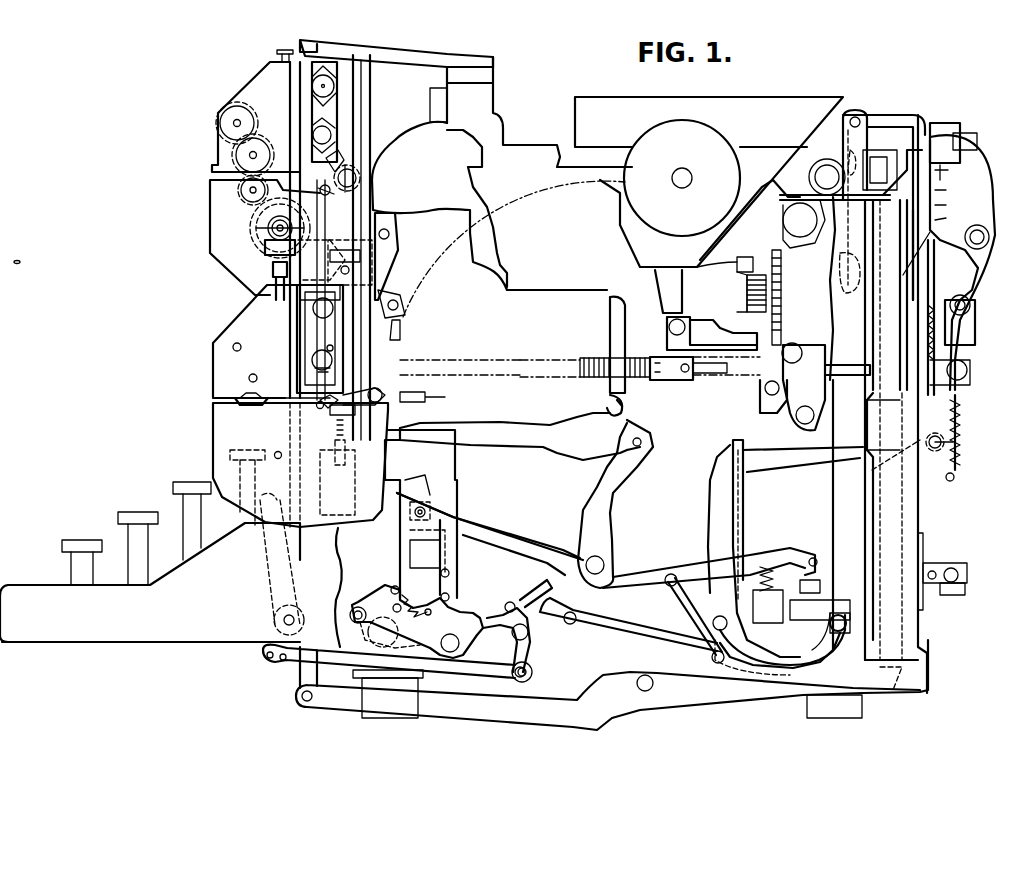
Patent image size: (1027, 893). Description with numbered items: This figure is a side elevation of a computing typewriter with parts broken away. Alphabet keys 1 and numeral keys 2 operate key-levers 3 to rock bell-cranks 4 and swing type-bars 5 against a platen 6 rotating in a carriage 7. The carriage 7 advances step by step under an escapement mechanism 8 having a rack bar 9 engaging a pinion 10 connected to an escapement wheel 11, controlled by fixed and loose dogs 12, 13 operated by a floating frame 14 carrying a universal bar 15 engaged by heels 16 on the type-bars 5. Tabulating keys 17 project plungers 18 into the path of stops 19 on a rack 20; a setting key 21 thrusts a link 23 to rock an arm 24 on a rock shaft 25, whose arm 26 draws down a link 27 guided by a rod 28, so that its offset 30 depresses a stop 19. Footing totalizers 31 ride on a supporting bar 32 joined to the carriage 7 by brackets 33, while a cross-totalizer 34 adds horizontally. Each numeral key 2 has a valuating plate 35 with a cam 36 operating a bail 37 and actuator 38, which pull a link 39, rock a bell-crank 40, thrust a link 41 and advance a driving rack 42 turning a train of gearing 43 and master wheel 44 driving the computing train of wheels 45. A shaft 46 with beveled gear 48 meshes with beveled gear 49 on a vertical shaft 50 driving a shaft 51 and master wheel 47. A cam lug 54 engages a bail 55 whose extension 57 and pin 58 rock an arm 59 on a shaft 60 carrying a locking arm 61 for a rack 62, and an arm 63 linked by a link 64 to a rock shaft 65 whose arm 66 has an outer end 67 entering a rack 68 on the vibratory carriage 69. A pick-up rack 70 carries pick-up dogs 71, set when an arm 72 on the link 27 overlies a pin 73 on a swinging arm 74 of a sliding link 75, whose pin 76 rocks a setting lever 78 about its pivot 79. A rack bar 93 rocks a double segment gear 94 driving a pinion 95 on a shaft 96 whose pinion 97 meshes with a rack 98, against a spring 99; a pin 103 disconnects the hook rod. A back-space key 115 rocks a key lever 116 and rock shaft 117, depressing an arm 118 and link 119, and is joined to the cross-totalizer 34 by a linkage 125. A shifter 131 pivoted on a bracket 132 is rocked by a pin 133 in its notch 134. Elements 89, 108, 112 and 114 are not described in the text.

The alphabet keys 1 is at (142, 512).
The numeral keys 2 is at (245, 455).
The key-levers 3 is at (540, 545).
The bell-cranks 4 is at (630, 480).
The type-bars 5 is at (463, 428).
The platen 6 is at (682, 227).
The carriage 7 is at (607, 187).
The escapement mechanism 8 is at (783, 296).
The rack bar 9 is at (740, 257).
The pinion 10 is at (747, 296).
The escapement wheel 11 is at (781, 267).
The fixed dog 12 is at (757, 345).
The loose dog 13 is at (788, 345).
The floating frame 14 is at (760, 386).
The universal bar 15 is at (625, 337).
The heels 16 is at (606, 406).
The tabulating keys 17 is at (296, 690).
The plungers 18 is at (905, 627).
The stops 19 is at (893, 200).
The rack 20 is at (880, 170).
The key 21 is at (285, 410).
The link 23 is at (688, 612).
The arm 24 is at (812, 652).
The rock shaft 25 is at (840, 613).
The arm 26 is at (801, 595).
The link 27 is at (718, 462).
The rod 28 is at (855, 295).
The offset 30 is at (860, 112).
The footing totalizers 31 is at (247, 123).
The supporting bar 32 is at (292, 85).
The brackets 33 is at (398, 47).
The cross-totalizer 34 is at (256, 345).
The valuating plate 35 is at (440, 510).
The cam 36 is at (410, 565).
The bail 37 is at (450, 575).
The actuator 38 is at (455, 612).
The link 39 is at (355, 550).
The bell-crank 40 is at (343, 247).
The link 41 is at (317, 270).
The driving rack 42 is at (262, 254).
The train of gearing 43 is at (244, 213).
The master wheel 44 is at (262, 155).
The computing train of wheels 45 is at (225, 147).
The shaft 46 is at (276, 228).
The master wheel 47 is at (242, 395).
The beveled gear 48 is at (279, 218).
The beveled gear 49 is at (283, 228).
The vertical shaft 50 is at (272, 272).
The shaft 51 is at (279, 460).
The cam lug 54 is at (418, 490).
The bail 55 is at (422, 490).
The extension 57 is at (400, 332).
The pin 58 is at (400, 306).
The arm 59 is at (395, 282).
The shaft 60 is at (357, 178).
The locking arm 61 is at (339, 152).
The rack 62 is at (324, 112).
The arm 63 is at (318, 195).
The link 64 is at (350, 267).
The rock shaft 65 is at (363, 395).
The arm 66 is at (345, 418).
The outer end 67 is at (325, 410).
The rack 68 is at (317, 408).
The vibratory carriage 69 is at (303, 376).
The pick-up rack 70 is at (950, 125).
The pick-up dogs 71 is at (977, 140).
The arm 72 is at (893, 452).
The pin 73 is at (935, 435).
The swinging arm 74 is at (928, 436).
The sliding link 75 is at (975, 337).
The pin 76 is at (971, 303).
The setting lever 78 is at (993, 180).
The pivot 79 is at (990, 235).
The bracket 89 is at (918, 540).
The rack bar 93 is at (910, 235).
The double segment gear 94 is at (928, 310).
The pinion 95 is at (945, 365).
The shaft 96 is at (632, 382).
The pinion 97 is at (310, 352).
The rack 98 is at (336, 348).
The spring 99 is at (640, 355).
The pin 103 is at (945, 176).
The pin 108 is at (942, 219).
The pin 112 is at (946, 190).
The pin 114 is at (946, 206).
The back-space key 115 is at (326, 445).
The key lever 116 is at (612, 685).
The rock shaft 117 is at (815, 660).
The arm 118 is at (755, 670).
The link 119 is at (744, 522).
The linkage 125 is at (428, 398).
The shifter 131 is at (900, 114).
The bracket 132 is at (845, 118).
The pin 133 is at (827, 177).
The notch 134 is at (847, 160).